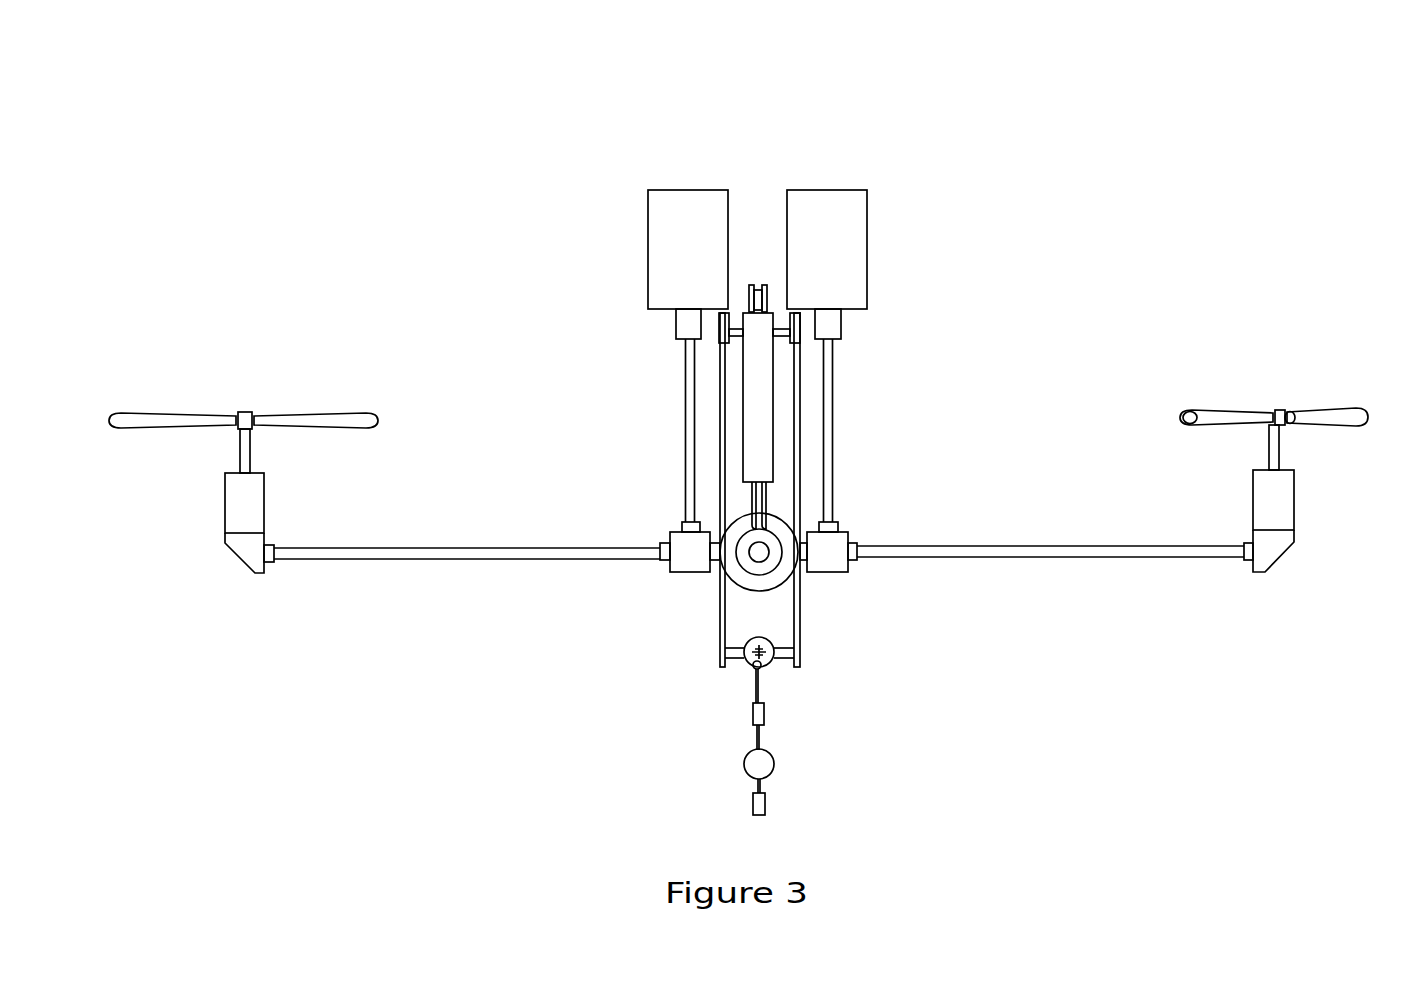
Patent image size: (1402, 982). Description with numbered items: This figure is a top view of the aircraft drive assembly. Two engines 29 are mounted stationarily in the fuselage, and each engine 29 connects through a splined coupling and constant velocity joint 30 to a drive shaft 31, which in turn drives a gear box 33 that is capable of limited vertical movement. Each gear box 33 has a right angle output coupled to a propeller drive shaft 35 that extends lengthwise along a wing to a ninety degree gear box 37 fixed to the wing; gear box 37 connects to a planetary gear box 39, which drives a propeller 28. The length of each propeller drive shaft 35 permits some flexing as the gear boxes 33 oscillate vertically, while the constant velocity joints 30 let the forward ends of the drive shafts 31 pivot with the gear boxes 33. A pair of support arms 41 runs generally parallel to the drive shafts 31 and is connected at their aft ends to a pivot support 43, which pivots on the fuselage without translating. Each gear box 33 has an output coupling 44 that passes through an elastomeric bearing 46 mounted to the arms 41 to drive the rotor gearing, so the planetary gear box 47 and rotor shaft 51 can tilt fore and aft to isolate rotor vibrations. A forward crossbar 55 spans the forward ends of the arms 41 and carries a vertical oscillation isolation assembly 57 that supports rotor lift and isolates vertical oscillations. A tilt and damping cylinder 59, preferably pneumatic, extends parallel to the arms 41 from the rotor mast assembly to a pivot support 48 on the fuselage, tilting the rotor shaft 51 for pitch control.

The propeller 28 is at (1218, 410).
The engine 29 is at (660, 190).
The splined coupling and constant velocity joint 30 is at (842, 318).
The drive shaft 31 is at (833, 437).
The gear box 33 is at (848, 532).
The propeller drive shaft 35 is at (1003, 545).
The 90 degree gear box 37 is at (1253, 567).
The planetary gear box 39 is at (1253, 517).
The support arm 41 is at (800, 585).
The pivot support 43 is at (731, 323).
The output coupling 44 is at (715, 558).
The elastomeric bearing 46 is at (722, 547).
The planetary gear box 47 is at (738, 580).
The tilt cylinder pivot support 48 is at (765, 285).
The rotor shaft 51 is at (762, 565).
The forward crossbar 55 is at (783, 660).
The vertical oscillation isolation assembly 57 is at (703, 692).
The tilt and damping cylinder 59 is at (750, 364).